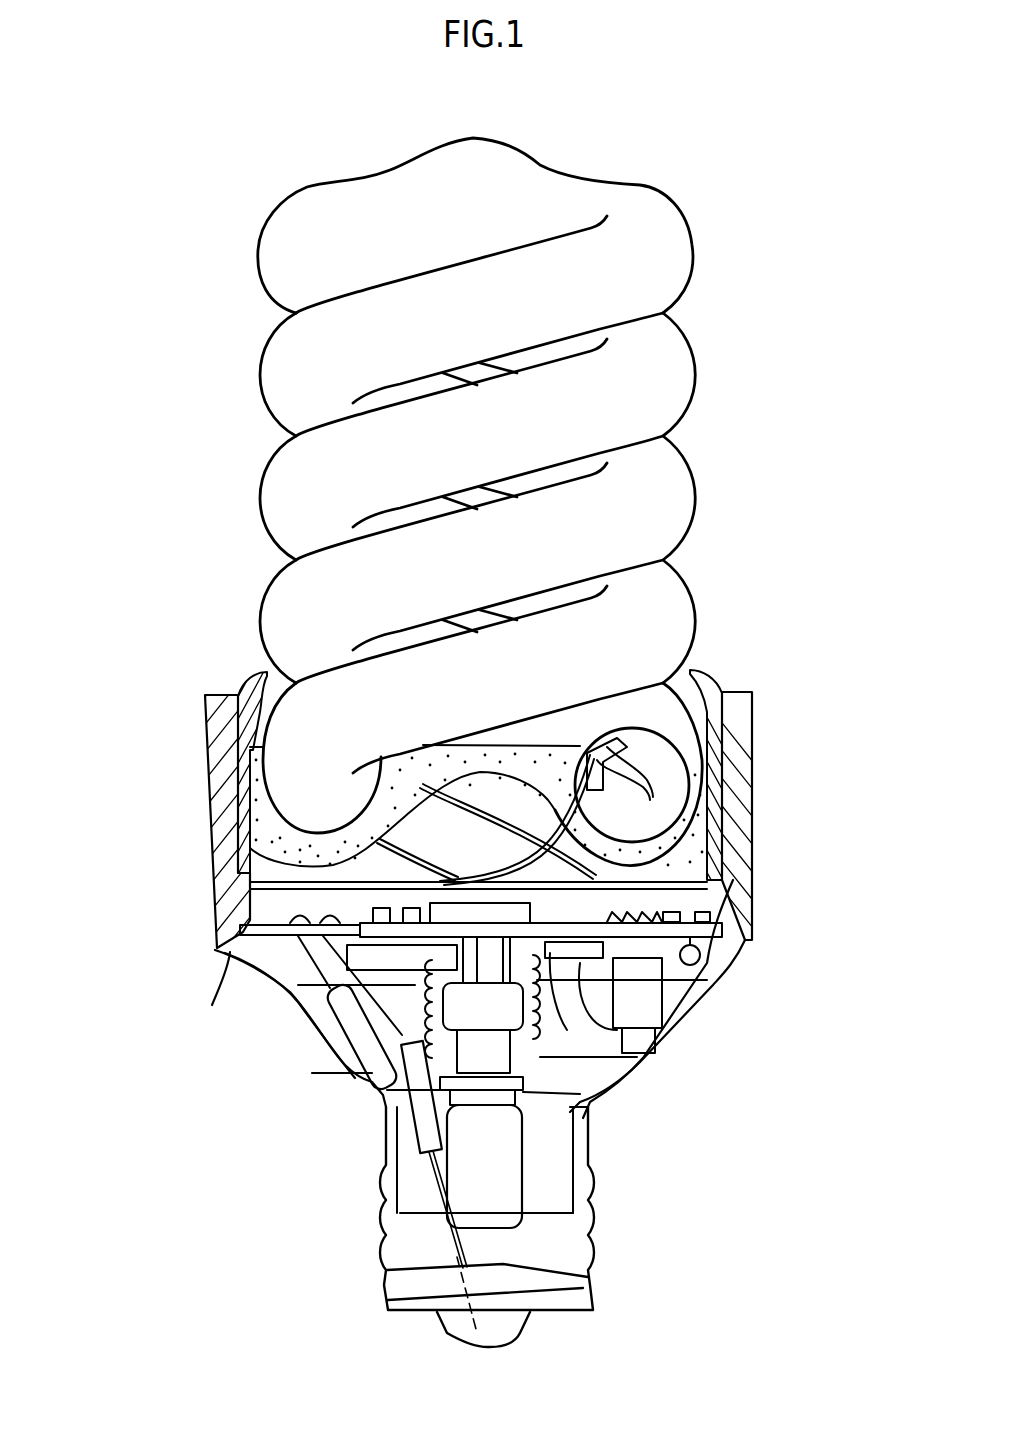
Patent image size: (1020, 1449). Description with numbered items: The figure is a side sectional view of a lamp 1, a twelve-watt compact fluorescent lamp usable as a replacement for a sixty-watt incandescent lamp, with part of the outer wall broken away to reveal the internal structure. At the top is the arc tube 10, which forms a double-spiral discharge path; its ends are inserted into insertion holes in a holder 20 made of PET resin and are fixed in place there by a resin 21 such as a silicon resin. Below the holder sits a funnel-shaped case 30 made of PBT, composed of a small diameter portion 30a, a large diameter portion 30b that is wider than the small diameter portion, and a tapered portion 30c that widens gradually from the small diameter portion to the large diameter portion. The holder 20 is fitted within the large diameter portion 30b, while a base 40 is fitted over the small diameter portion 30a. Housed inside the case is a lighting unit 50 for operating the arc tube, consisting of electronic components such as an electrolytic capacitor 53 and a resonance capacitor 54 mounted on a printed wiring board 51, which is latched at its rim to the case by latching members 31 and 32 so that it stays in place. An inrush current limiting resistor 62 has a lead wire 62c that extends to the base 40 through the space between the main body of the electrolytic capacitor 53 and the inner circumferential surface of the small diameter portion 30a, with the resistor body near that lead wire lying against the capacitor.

The lamp 1 is at (678, 148).
The arc tube 10 is at (688, 497).
The holder 20 is at (715, 732).
The resin 21 is at (697, 818).
The case 30 is at (737, 880).
The small diameter portion 30a is at (392, 1137).
The large diameter portion 30b is at (220, 750).
The tapered portion 30c is at (280, 997).
The latching member 31 is at (717, 917).
The latching member 32 is at (243, 918).
The base 40 is at (583, 1277).
The lighting unit 50 is at (575, 1037).
The printed wiring board 51 is at (243, 950).
The electrolytic capacitor 53 is at (490, 1170).
The resonance capacitor 54 is at (345, 1030).
The inrush current limiting resistor 62 is at (417, 1122).
The lead wire 62c is at (432, 1180).